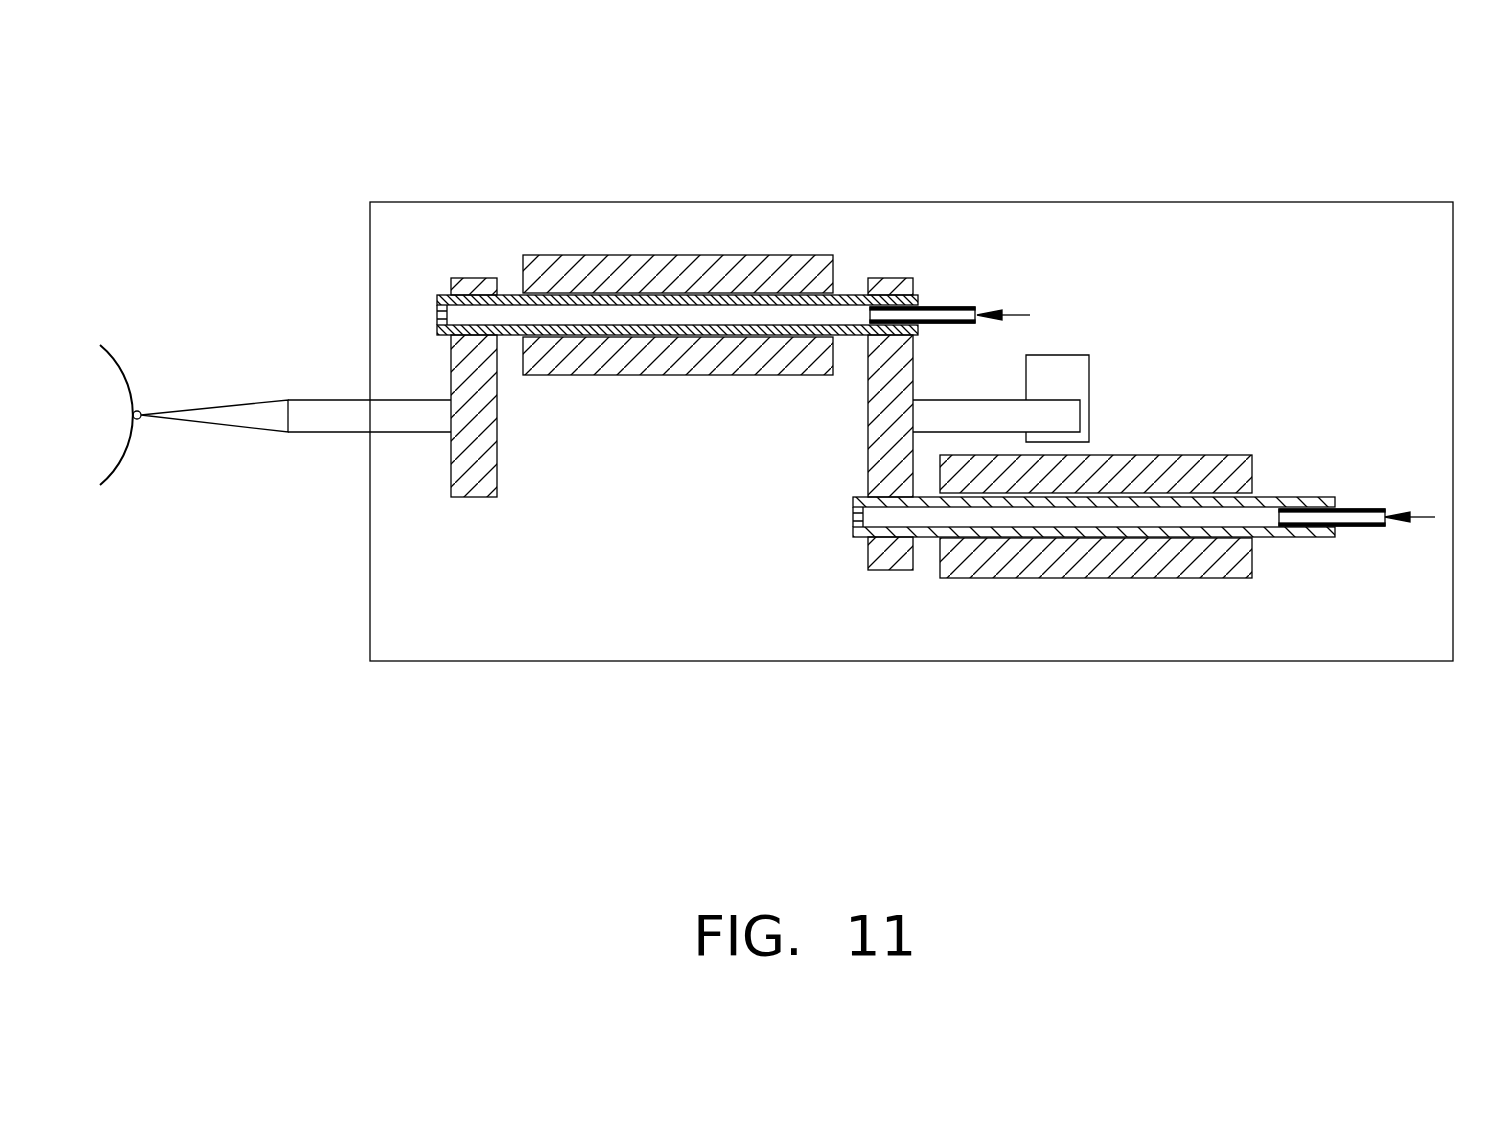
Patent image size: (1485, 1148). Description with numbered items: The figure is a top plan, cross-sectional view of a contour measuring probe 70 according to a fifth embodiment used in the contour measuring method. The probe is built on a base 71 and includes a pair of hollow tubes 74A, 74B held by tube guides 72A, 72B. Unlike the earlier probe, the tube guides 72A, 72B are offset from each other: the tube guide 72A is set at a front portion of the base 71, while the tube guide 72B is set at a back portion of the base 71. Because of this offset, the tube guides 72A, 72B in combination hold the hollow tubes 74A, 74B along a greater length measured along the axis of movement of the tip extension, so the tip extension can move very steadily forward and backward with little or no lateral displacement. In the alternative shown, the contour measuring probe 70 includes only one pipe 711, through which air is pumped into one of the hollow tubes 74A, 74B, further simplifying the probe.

The contour measuring probe 70 is at (318, 127).
The base 71 is at (930, 230).
The pipe 711 is at (953, 303).
The tube guide 72A is at (626, 268).
The tube guide 72B is at (1145, 558).
The hollow tube 74A is at (443, 300).
The hollow tube 74B is at (932, 530).